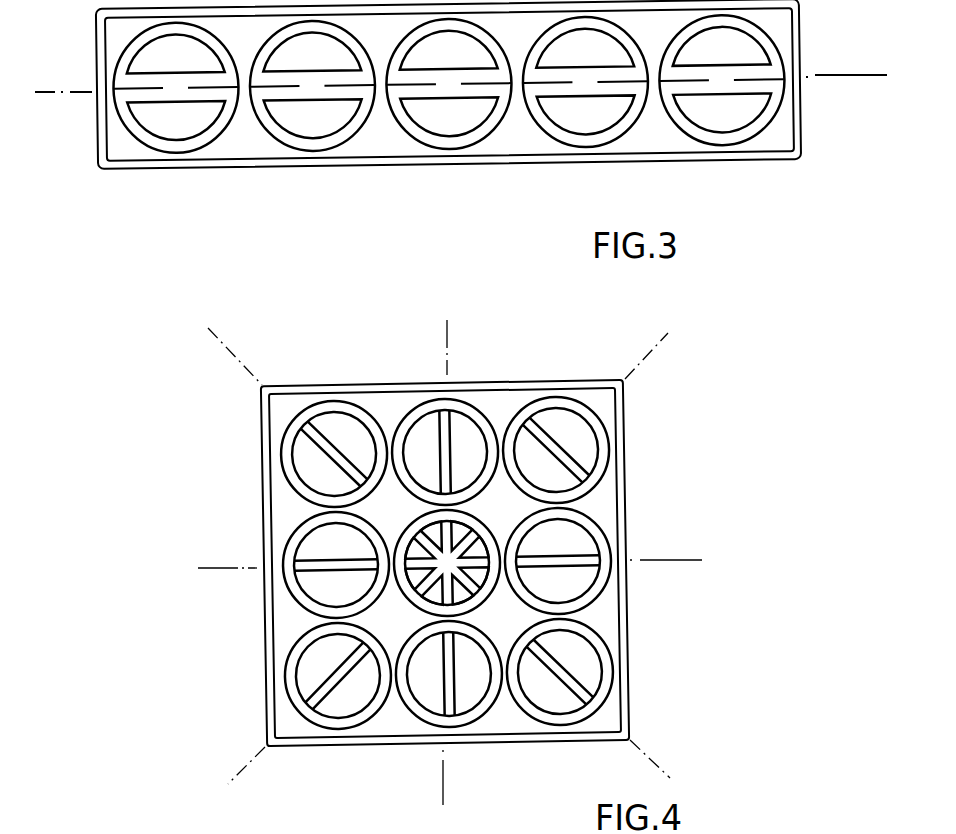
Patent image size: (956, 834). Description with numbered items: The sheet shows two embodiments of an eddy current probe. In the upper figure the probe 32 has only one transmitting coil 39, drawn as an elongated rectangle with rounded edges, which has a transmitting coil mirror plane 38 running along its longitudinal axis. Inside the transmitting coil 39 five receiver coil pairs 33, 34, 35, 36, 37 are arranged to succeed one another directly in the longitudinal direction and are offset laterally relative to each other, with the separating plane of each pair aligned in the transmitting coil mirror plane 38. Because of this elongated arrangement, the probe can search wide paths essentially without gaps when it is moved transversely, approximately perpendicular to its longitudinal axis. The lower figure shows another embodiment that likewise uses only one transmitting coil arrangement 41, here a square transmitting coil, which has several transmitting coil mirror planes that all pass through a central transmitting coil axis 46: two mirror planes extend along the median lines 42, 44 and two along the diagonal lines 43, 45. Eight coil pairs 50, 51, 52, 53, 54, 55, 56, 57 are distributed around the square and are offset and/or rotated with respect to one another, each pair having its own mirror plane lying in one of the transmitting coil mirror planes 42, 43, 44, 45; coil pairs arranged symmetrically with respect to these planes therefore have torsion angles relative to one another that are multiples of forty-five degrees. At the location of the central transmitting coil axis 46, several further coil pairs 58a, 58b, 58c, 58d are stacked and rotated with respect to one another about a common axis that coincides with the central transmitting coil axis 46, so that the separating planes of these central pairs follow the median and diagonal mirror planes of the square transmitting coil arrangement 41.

In FIG. 3, the carrier strip assembly 32 is at (363, 184).
In FIG. 3, the receiver coil pair 33 is at (177, 145).
In FIG. 3, the receiver coil pair 34 is at (323, 145).
In FIG. 3, the receiver coil pair 35 is at (460, 142).
In FIG. 3, the receiver coil pair 36 is at (595, 142).
In FIG. 3, the receiver coil pair 37 is at (735, 142).
In FIG. 3, the transmitting coil mirror plane 38 is at (824, 72).
In FIG. 3, the transmitting coil 39 is at (650, 155).
In FIG. 4, the transmitting coil arrangement 41 is at (630, 490).
In FIG. 4, the median line mirror plane 42 is at (232, 568).
In FIG. 4, the diagonal line mirror plane 43 is at (283, 362).
In FIG. 4, the median line mirror plane 44 is at (447, 346).
In FIG. 4, the diagonal line mirror plane 45 is at (633, 370).
In FIG. 4, the central transmitting coil axis 46 is at (470, 568).
In FIG. 4, the coil pair 50 is at (612, 435).
In FIG. 4, the coil pair 51 is at (598, 590).
In FIG. 4, the coil pair 52 is at (557, 725).
In FIG. 4, the coil pair 53 is at (468, 725).
In FIG. 4, the coil pair 54 is at (310, 728).
In FIG. 4, the coil pair 55 is at (287, 590).
In FIG. 4, the coil pair 56 is at (288, 440).
In FIG. 4, the coil pair 57 is at (420, 410).
In FIG. 4, the coil pair 58a is at (460, 522).
In FIG. 4, the coil pair 58b is at (493, 590).
In FIG. 4, the coil pair 58c is at (423, 530).
In FIG. 4, the coil pair 58d is at (480, 553).